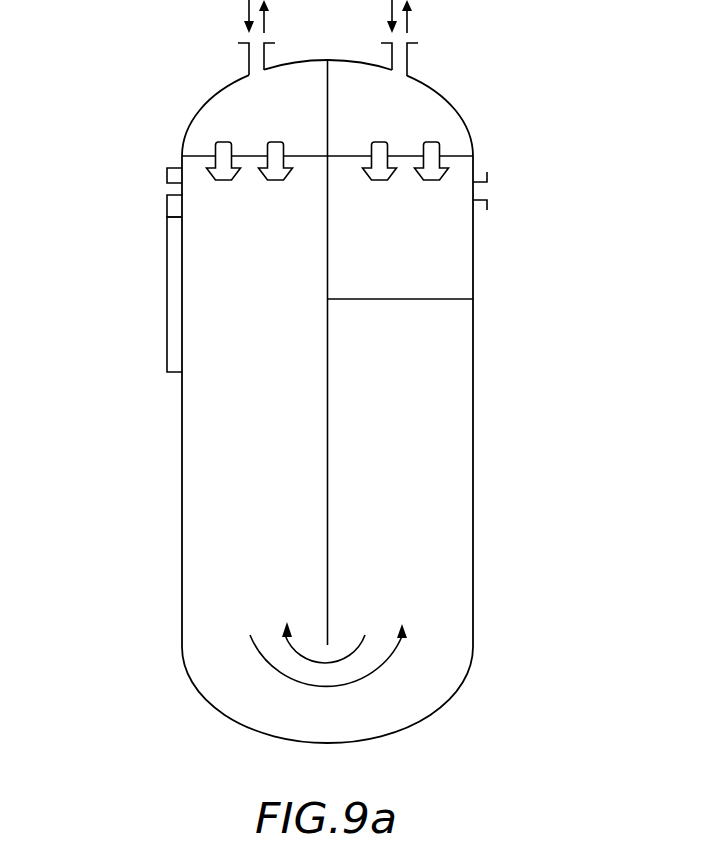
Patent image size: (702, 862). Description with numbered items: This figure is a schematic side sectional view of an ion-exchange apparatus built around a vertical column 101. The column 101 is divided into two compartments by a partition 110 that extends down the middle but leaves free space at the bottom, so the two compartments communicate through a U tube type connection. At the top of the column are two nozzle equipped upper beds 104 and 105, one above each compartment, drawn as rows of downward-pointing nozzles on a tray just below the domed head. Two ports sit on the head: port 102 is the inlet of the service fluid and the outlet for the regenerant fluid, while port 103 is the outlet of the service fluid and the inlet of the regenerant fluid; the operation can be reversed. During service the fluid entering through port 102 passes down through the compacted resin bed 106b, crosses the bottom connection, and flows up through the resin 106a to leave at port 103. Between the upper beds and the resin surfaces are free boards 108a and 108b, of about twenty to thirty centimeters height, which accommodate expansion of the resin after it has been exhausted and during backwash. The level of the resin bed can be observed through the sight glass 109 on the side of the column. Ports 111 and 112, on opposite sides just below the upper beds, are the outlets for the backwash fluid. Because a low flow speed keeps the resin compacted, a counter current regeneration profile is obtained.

The column 101 is at (472, 520).
The port 102 is at (245, 45).
The port 103 is at (417, 53).
The nozzle equipped upper bed 104 is at (215, 173).
The nozzle equipped upper bed 105 is at (449, 171).
The resin 106a is at (437, 478).
The resin bed 106b is at (282, 478).
The free board 108a is at (283, 267).
The free board 108b is at (437, 267).
The sight glass 109 is at (167, 297).
The partition 110 is at (326, 580).
The port 111 is at (167, 208).
The port 112 is at (487, 182).